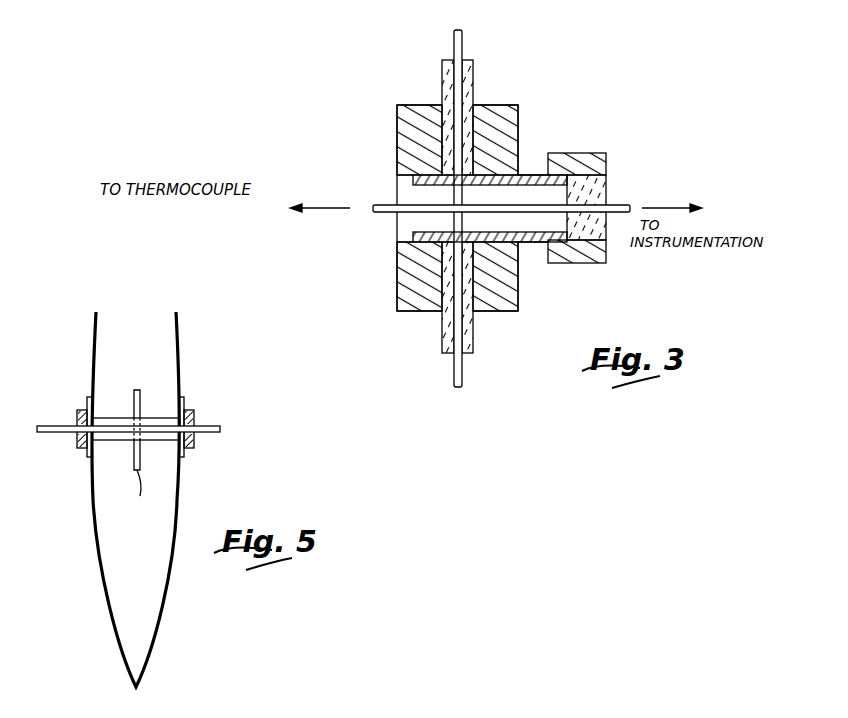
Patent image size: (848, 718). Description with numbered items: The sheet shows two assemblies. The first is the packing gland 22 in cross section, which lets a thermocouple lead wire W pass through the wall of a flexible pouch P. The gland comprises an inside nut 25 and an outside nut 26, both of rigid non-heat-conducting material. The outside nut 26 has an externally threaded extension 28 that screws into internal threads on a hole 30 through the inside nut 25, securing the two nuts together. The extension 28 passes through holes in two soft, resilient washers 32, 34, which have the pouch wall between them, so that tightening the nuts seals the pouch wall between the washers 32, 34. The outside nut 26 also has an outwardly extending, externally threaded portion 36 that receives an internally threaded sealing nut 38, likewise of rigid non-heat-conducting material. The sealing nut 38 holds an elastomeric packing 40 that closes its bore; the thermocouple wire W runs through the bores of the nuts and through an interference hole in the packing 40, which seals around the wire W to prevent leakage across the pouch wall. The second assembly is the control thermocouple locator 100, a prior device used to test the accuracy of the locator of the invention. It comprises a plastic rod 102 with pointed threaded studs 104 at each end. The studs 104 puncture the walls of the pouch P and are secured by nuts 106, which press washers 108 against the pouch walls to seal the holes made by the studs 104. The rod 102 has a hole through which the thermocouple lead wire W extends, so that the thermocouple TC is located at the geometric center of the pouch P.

In FIG. 3, the packing gland 22 is at (528, 81).
In FIG. 3, the inside nut 25 is at (397, 131).
In FIG. 3, the outside nut 26 is at (519, 133).
In FIG. 3, the externally threaded extension 28 is at (411, 186).
In FIG. 3, the hole 30 is at (400, 236).
In FIG. 3, the soft resilient washer 32 is at (474, 72).
In FIG. 3, the soft resilient washer 34 is at (442, 70).
In FIG. 3, the externally threaded portion 36 is at (533, 243).
In FIG. 3, the sealing nut 38 is at (594, 155).
In FIG. 3, the elastomeric packing 40 is at (606, 188).
In FIG. 5, the control thermocouple locator 100 is at (240, 513).
In FIG. 5, the plastic rod 102 is at (155, 418).
In FIG. 5, the pointed threaded stud 104 is at (52, 425).
In FIG. 5, the nut 106 is at (80, 448).
In FIG. 5, the washer 108 is at (87, 397).
In FIG. 3, the flexible pouch P is at (463, 32).
In FIG. 5, the flexible pouch P is at (179, 325).
In FIG. 3, the thermocouple lead wire W is at (385, 214).
In FIG. 5, the thermocouple lead wire W is at (137, 390).
In FIG. 5, the thermocouple TC is at (129, 492).